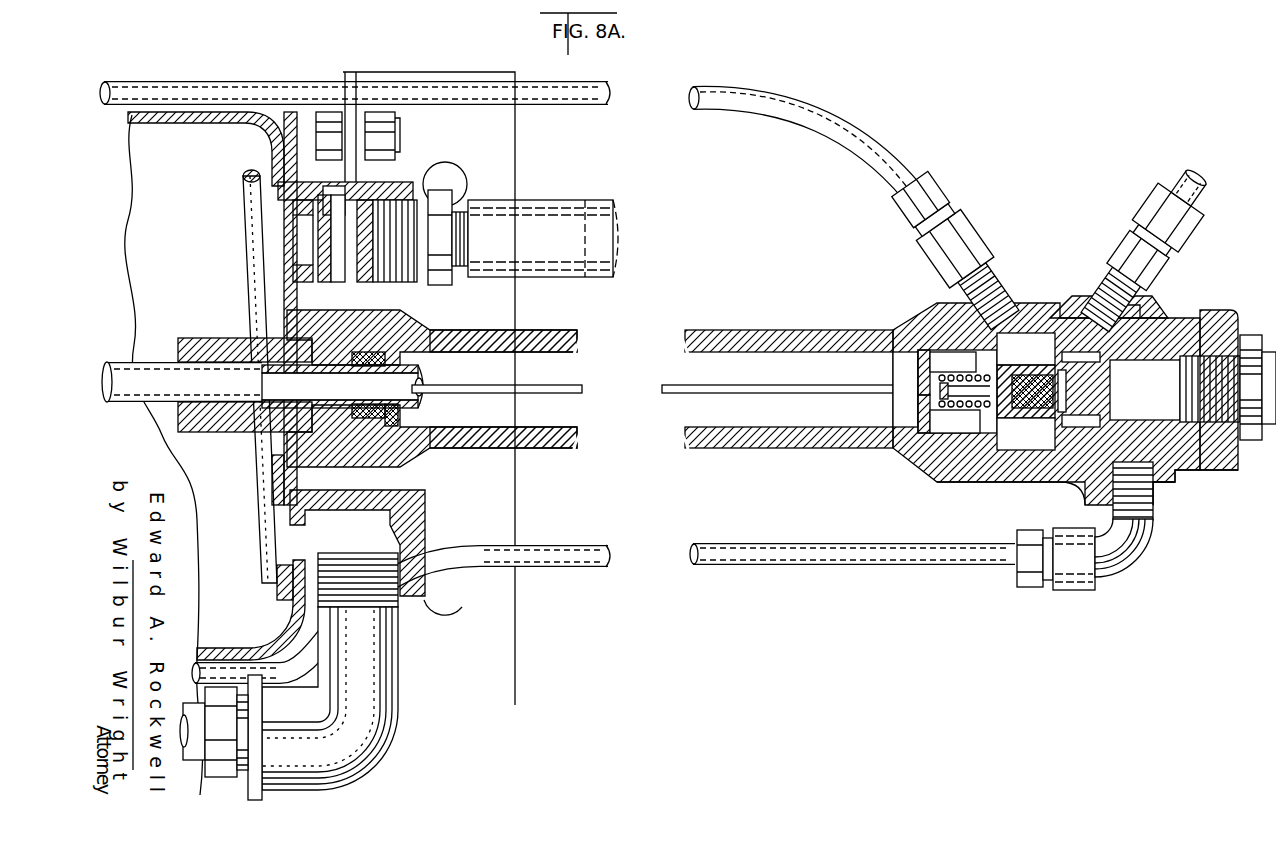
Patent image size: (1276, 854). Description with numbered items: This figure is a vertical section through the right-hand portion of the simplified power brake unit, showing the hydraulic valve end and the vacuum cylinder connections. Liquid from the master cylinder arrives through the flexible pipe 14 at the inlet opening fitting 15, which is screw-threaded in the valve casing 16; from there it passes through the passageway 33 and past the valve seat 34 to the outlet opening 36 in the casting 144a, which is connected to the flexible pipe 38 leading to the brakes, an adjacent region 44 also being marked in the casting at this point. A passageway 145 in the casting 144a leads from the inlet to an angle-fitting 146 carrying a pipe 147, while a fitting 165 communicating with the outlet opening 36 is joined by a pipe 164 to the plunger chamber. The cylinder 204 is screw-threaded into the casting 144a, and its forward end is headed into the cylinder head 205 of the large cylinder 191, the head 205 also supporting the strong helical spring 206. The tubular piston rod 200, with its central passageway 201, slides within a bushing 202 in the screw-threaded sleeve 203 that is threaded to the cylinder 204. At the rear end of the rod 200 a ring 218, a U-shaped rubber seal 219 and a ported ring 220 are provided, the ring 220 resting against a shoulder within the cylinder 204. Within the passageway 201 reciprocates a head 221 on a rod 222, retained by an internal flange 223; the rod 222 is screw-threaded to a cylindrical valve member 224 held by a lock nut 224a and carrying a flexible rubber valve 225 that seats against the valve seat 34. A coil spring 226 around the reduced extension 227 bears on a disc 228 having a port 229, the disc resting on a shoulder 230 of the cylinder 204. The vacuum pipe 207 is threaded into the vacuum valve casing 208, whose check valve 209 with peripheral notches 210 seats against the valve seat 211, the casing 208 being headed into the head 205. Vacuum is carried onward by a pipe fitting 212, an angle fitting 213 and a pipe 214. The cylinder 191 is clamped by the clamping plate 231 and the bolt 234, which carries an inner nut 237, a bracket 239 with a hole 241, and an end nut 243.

The flexible pipe 14 is at (1268, 430).
The inlet opening fitting 15 is at (1243, 345).
The valve casing 16 is at (1213, 436).
The passageway 33 is at (1085, 440).
The valve seat 34 is at (1079, 408).
The outlet opening 36 is at (1109, 320).
The flexible pipe 38 is at (1166, 186).
The passage 44 is at (1126, 324).
The casting 144a is at (1017, 466).
The passageway 145 is at (1148, 485).
The angle-fitting 146 is at (1132, 552).
The pipe 147 is at (700, 558).
The pipe 164 is at (104, 90).
The fitting 165 is at (976, 226).
The cylinder 191 is at (152, 187).
The tubular piston rod 200 is at (128, 388).
The central passageway 201 is at (432, 337).
The bushing 202 is at (182, 355).
The screw-threaded sleeve 203 is at (210, 428).
The cylinder 204 is at (692, 342).
The cylinder head 205 is at (285, 480).
The helical spring 206 is at (246, 180).
The vacuum pipe 207 is at (600, 233).
The vacuum valve casing 208 is at (380, 192).
The check valve 209 is at (333, 233).
The peripheral notches 210 is at (330, 195).
The valve seat 211 is at (300, 214).
The pipe fitting 212 is at (412, 522).
The angle fitting 213 is at (505, 707).
The pipe 214 is at (200, 745).
The ring 218 is at (357, 434).
The U-shaped rubber seal 219 is at (369, 339).
The ring 220 is at (382, 434).
The head 221 is at (410, 388).
The rod 222 is at (664, 391).
The internal flange 223 is at (422, 392).
The cylindrical valve member 224 is at (1026, 434).
The lock nut 224a is at (955, 421).
The flexible rubber valve 225 is at (1038, 370).
The coil spring 226 is at (953, 362).
The reduced extension 227 is at (1026, 349).
The disc 228 is at (920, 408).
The port 229 is at (920, 375).
The shoulder 230 is at (906, 342).
The clamping plate 231 is at (291, 112).
The bolt 234 is at (278, 130).
The inner nut 237 is at (330, 120).
The bracket 239 is at (494, 475).
The hole 241 is at (456, 176).
The nut 243 is at (385, 118).